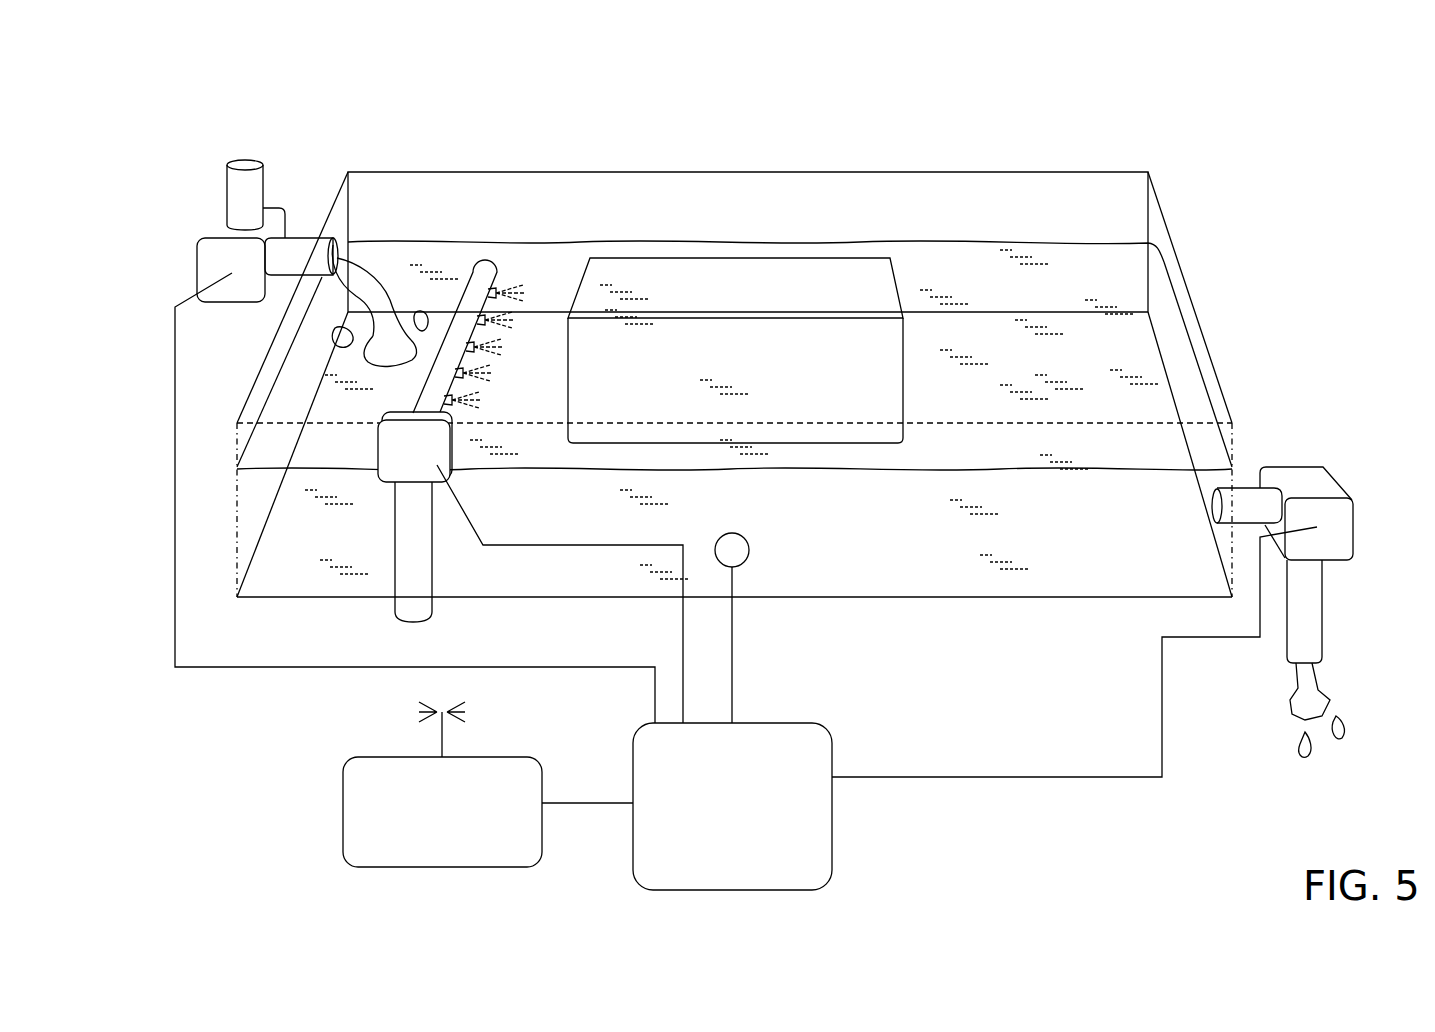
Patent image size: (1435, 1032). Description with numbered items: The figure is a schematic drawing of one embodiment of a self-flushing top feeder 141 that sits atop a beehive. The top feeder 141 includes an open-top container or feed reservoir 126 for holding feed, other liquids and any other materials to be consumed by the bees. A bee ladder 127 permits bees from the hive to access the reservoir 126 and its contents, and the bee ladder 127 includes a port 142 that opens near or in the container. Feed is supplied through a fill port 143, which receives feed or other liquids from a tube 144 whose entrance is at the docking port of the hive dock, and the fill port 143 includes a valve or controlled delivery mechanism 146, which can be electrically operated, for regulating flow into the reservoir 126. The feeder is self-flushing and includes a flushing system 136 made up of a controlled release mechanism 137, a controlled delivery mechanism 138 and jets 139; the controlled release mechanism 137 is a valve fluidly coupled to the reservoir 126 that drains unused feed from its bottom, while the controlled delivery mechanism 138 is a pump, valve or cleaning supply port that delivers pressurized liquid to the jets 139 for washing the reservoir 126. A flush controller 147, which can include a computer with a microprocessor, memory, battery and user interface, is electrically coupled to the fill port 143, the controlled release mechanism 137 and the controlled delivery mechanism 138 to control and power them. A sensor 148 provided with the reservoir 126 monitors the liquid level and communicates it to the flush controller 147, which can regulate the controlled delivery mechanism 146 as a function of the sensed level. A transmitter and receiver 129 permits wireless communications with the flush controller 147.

The feed reservoir 126 is at (1183, 280).
The bee ladder 127 is at (740, 255).
The transmitter and receiver 129 is at (340, 813).
The flushing system 136 is at (500, 240).
The controlled release mechanism 137 is at (1348, 515).
The controlled fluid delivery mechanism 138 is at (432, 462).
The jets 139 is at (498, 277).
The top feeder 141 is at (1193, 162).
The port 142 is at (813, 267).
The fill port 143 is at (290, 200).
The tube 144 is at (225, 193).
The controlled delivery mechanism 146 is at (200, 270).
The flush controller 147 is at (833, 835).
The sensor 148 is at (750, 552).